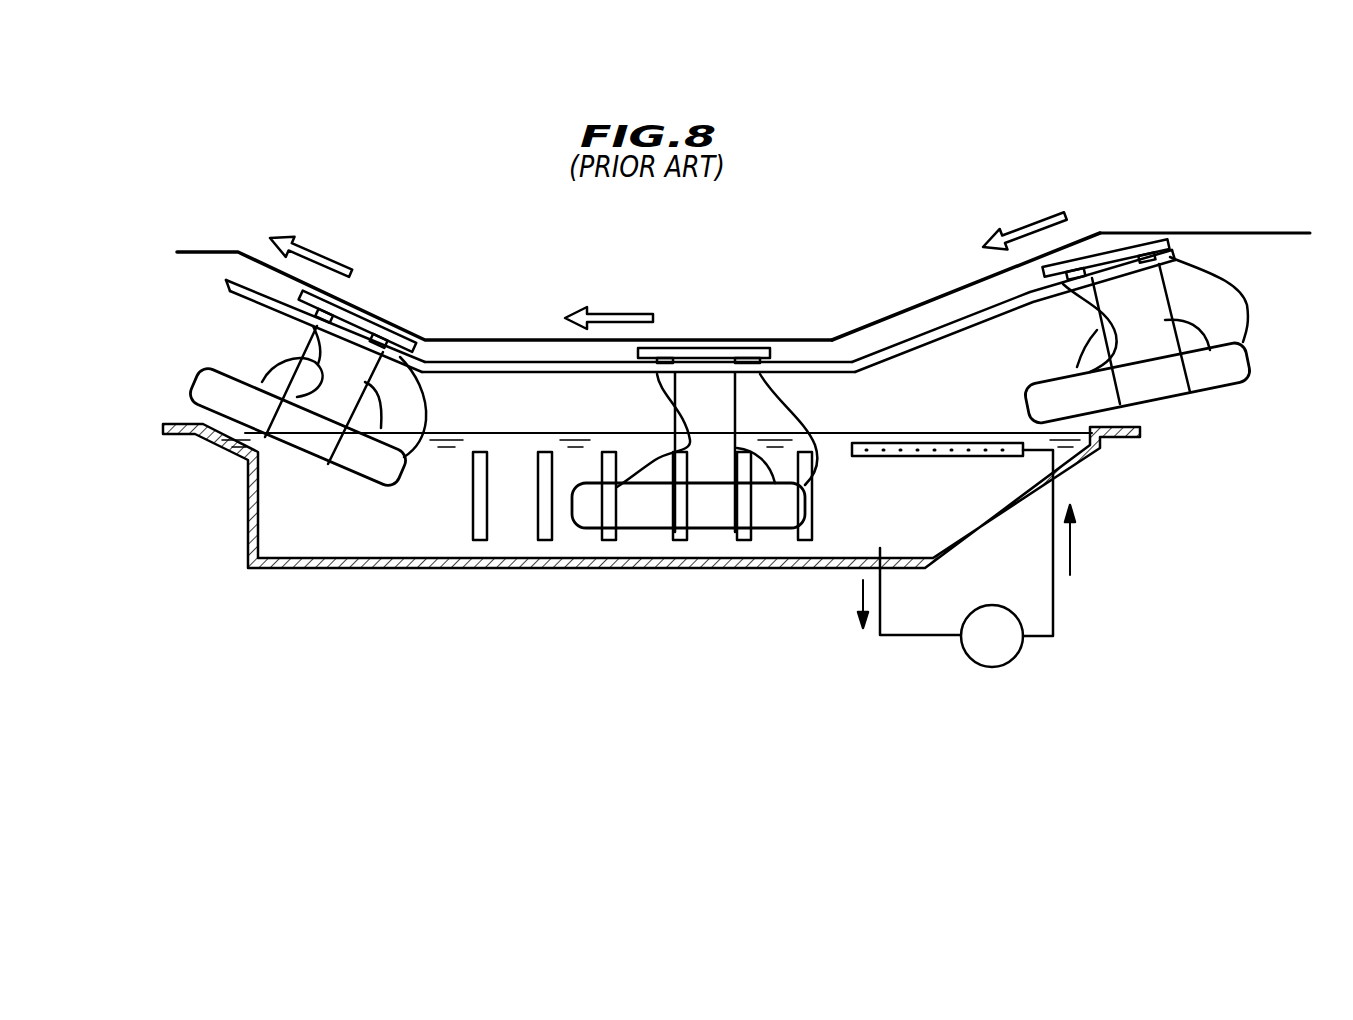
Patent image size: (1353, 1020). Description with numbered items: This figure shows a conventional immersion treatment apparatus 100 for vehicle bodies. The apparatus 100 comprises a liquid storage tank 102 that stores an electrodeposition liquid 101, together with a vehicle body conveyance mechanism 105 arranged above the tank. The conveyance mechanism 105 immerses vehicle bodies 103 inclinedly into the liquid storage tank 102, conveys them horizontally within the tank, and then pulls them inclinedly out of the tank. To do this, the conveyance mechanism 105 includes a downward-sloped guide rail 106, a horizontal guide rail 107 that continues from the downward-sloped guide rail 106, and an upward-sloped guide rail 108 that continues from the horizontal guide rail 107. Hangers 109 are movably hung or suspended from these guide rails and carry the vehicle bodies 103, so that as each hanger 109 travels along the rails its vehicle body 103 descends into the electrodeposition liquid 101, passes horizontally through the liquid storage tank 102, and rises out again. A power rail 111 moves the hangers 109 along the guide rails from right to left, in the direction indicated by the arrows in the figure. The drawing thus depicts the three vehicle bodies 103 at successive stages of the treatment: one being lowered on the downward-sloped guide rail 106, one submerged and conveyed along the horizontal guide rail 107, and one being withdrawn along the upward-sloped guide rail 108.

The immersion treatment apparatus 100 is at (352, 150).
The electrodeposition liquid 101 is at (835, 435).
The liquid storage tank 102 is at (650, 570).
The vehicle body 103 is at (190, 385).
The vehicle body conveyance mechanism 105 is at (1158, 212).
The downward-sloped guide rail 106 is at (978, 323).
The horizontal guide rail 107 is at (562, 373).
The upward-sloped guide rail 108 is at (243, 297).
The hanger 109 is at (307, 348).
The power rail 111 is at (905, 312).